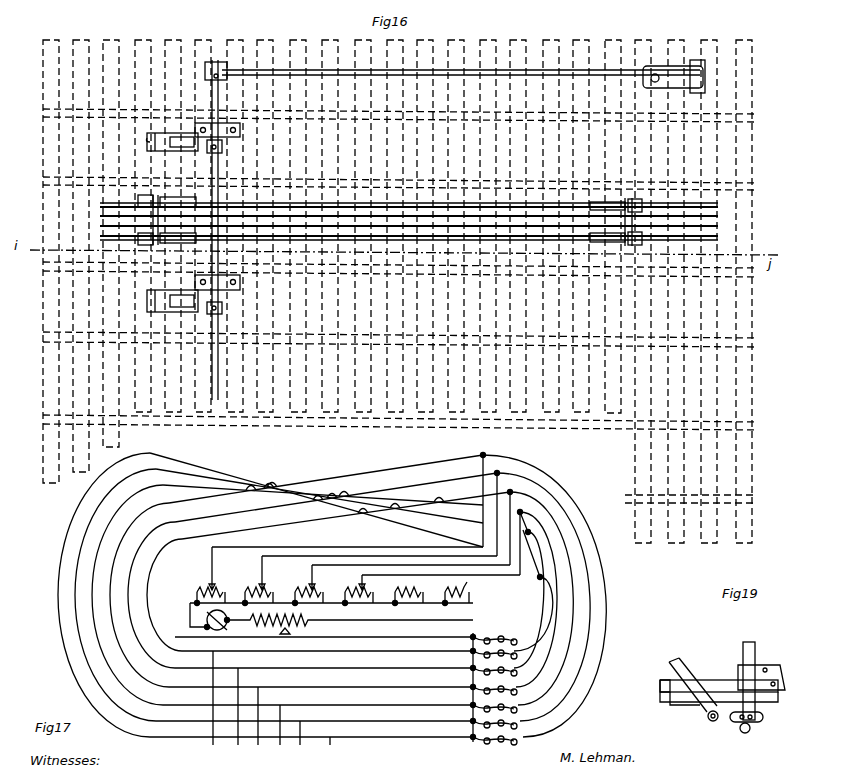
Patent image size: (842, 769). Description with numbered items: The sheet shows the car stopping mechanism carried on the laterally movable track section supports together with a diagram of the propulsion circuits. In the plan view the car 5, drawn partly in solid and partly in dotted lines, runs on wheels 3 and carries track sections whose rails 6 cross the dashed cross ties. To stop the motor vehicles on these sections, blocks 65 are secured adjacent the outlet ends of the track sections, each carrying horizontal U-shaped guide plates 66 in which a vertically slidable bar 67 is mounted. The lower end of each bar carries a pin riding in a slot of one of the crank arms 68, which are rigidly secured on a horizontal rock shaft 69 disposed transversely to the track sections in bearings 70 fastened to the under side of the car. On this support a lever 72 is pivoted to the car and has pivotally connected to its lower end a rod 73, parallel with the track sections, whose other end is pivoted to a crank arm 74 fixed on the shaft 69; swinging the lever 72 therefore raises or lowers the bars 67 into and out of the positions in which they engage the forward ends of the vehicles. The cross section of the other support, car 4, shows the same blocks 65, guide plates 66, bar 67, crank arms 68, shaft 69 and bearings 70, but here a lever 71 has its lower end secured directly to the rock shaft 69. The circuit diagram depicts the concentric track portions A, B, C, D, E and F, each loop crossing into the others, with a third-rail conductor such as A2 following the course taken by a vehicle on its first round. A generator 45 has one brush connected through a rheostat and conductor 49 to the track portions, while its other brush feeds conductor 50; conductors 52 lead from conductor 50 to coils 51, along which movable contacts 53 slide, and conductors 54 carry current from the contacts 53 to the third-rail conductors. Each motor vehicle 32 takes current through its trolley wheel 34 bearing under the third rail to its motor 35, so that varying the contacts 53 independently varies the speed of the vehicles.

In FIG. 16, the wheels 3 is at (140, 200).
In FIG. 16, the car 5 is at (456, 44).
In FIG. 16, the rock shaft 69 is at (218, 62).
In FIG. 19, the rock shaft 69 is at (706, 720).
In FIG. 16, the crank arm 74 is at (230, 70).
In FIG. 16, the rod 73 is at (520, 70).
In FIG. 16, the lever 72 is at (655, 68).
In FIG. 16, the bearings 70 is at (225, 135).
In FIG. 19, the bearings 70 is at (695, 700).
In FIG. 16, the blocks 65 is at (163, 135).
In FIG. 19, the blocks 65 is at (745, 678).
In FIG. 16, the guide plates 66 is at (148, 136).
In FIG. 19, the guide plates 66 is at (760, 668).
In FIG. 16, the vertically slidable bar 67 is at (182, 146).
In FIG. 19, the vertically slidable bar 67 is at (750, 648).
In FIG. 16, the crank arms 68 is at (225, 150).
In FIG. 19, the crank arms 68 is at (735, 720).
In FIG. 17, the motor vehicle 32 is at (498, 640).
In FIG. 17, the motor 35 is at (590, 600).
In FIG. 17, the electric generator 45 is at (212, 618).
In FIG. 17, the conductor 49 is at (440, 614).
In FIG. 17, the conductor 50 is at (196, 602).
In FIG. 17, the coils 51 is at (200, 590).
In FIG. 17, the conductors 52 is at (350, 624).
In FIG. 17, the movable contacts 53 is at (250, 590).
In FIG. 17, the conductors 54 is at (340, 586).
In FIG. 17, the trolley wheel 34 is at (476, 636).
In FIG. 17, the electric conductor A2 is at (262, 478).
In FIG. 17, the track portion A is at (210, 705).
In FIG. 17, the track portion B is at (237, 714).
In FIG. 17, the track portion C is at (257, 723).
In FIG. 17, the track portion D is at (277, 732).
In FIG. 17, the track portion E is at (298, 740).
In FIG. 17, the track portion F is at (322, 748).
In FIG. 19, the car 4 is at (665, 700).
In FIG. 19, the lever 71 is at (685, 670).
In FIG. 19, the rails 6 is at (705, 680).